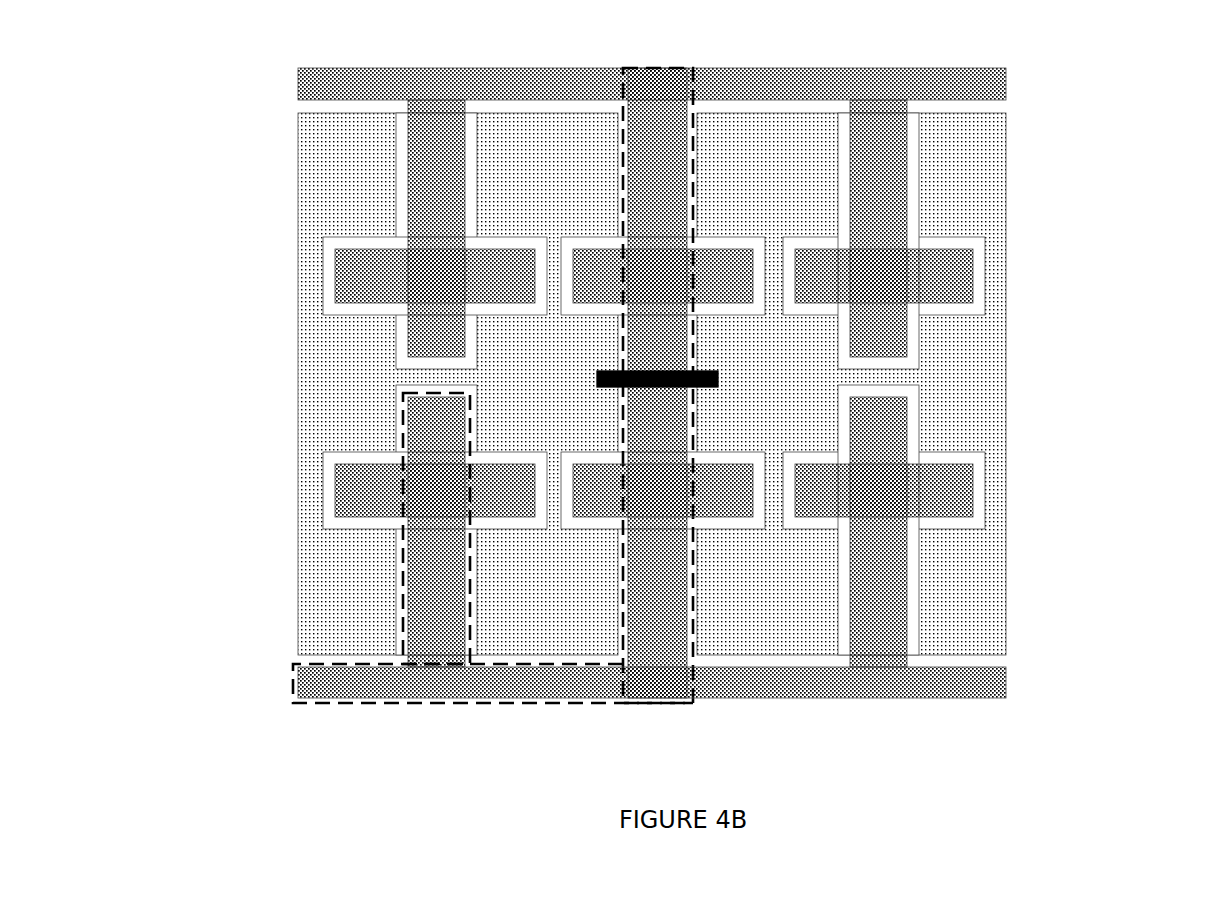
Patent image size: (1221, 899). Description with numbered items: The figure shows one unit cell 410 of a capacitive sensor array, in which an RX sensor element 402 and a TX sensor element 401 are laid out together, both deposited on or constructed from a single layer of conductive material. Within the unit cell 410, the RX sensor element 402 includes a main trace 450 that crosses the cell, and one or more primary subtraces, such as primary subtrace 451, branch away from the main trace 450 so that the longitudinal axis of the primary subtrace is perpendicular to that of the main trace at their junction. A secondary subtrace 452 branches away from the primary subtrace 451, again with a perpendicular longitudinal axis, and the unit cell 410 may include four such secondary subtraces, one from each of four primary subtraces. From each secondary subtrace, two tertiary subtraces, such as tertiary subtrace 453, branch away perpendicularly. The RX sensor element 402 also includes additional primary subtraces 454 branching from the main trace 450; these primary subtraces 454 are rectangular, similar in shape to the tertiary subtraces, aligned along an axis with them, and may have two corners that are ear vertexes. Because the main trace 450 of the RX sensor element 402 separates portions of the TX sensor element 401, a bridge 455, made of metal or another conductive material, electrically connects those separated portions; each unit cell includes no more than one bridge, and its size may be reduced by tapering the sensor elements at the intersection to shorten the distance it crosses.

The TX sensor element 401 is at (312, 182).
The RX sensor element 402 is at (316, 79).
The unit cell 410 is at (671, 415).
The main trace 450 is at (662, 670).
The primary subtrace 451 is at (320, 680).
The secondary subtrace 452 is at (426, 585).
The tertiary subtrace 453 is at (356, 490).
The primary subtraces 454 is at (603, 496).
The bridge 455 is at (722, 378).